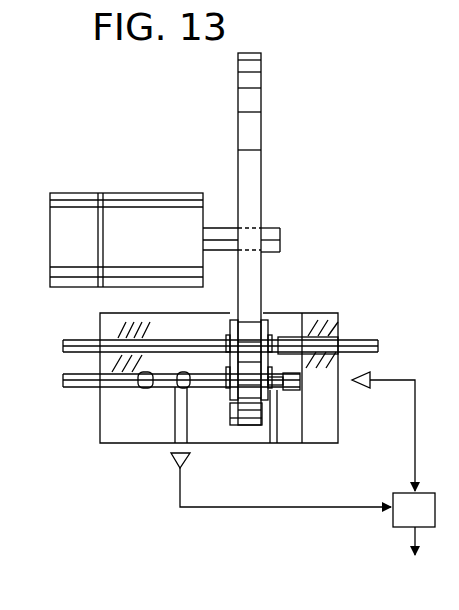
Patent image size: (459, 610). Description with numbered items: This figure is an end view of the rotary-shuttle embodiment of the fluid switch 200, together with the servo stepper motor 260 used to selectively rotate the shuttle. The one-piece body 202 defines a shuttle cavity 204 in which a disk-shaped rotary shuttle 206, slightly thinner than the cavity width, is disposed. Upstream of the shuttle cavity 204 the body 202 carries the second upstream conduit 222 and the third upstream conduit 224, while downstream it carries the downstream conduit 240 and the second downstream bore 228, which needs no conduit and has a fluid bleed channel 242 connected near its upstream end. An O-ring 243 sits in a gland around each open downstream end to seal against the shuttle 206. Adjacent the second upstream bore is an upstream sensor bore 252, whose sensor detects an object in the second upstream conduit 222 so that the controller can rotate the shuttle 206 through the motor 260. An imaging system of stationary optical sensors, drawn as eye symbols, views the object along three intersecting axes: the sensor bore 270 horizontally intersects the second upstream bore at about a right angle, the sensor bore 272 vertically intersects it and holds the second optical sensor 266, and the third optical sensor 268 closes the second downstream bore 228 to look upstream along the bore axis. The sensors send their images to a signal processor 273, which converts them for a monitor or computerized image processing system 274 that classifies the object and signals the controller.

The fluid switch 200 is at (364, 262).
The body 202 is at (113, 428).
The shuttle cavity 204 is at (240, 305).
The rotary shuttle 206 is at (263, 128).
The second upstream conduit 222 is at (97, 375).
The third upstream conduit 224 is at (97, 340).
The second downstream bore 228 is at (300, 383).
The downstream conduit 240 is at (368, 338).
The fluid bleed channel 242 is at (275, 393).
The O-ring 243 is at (229, 335).
The upstream sensor bore 252 is at (150, 388).
The servo stepper motor 260 is at (125, 192).
The second optical sensor 266 is at (186, 466).
The third optical sensor 268 is at (366, 372).
The sensor bore 270 is at (185, 373).
The sensor bore 272 is at (192, 432).
The signal processor 273 is at (400, 530).
The monitor / image processing system 274 is at (390, 557).